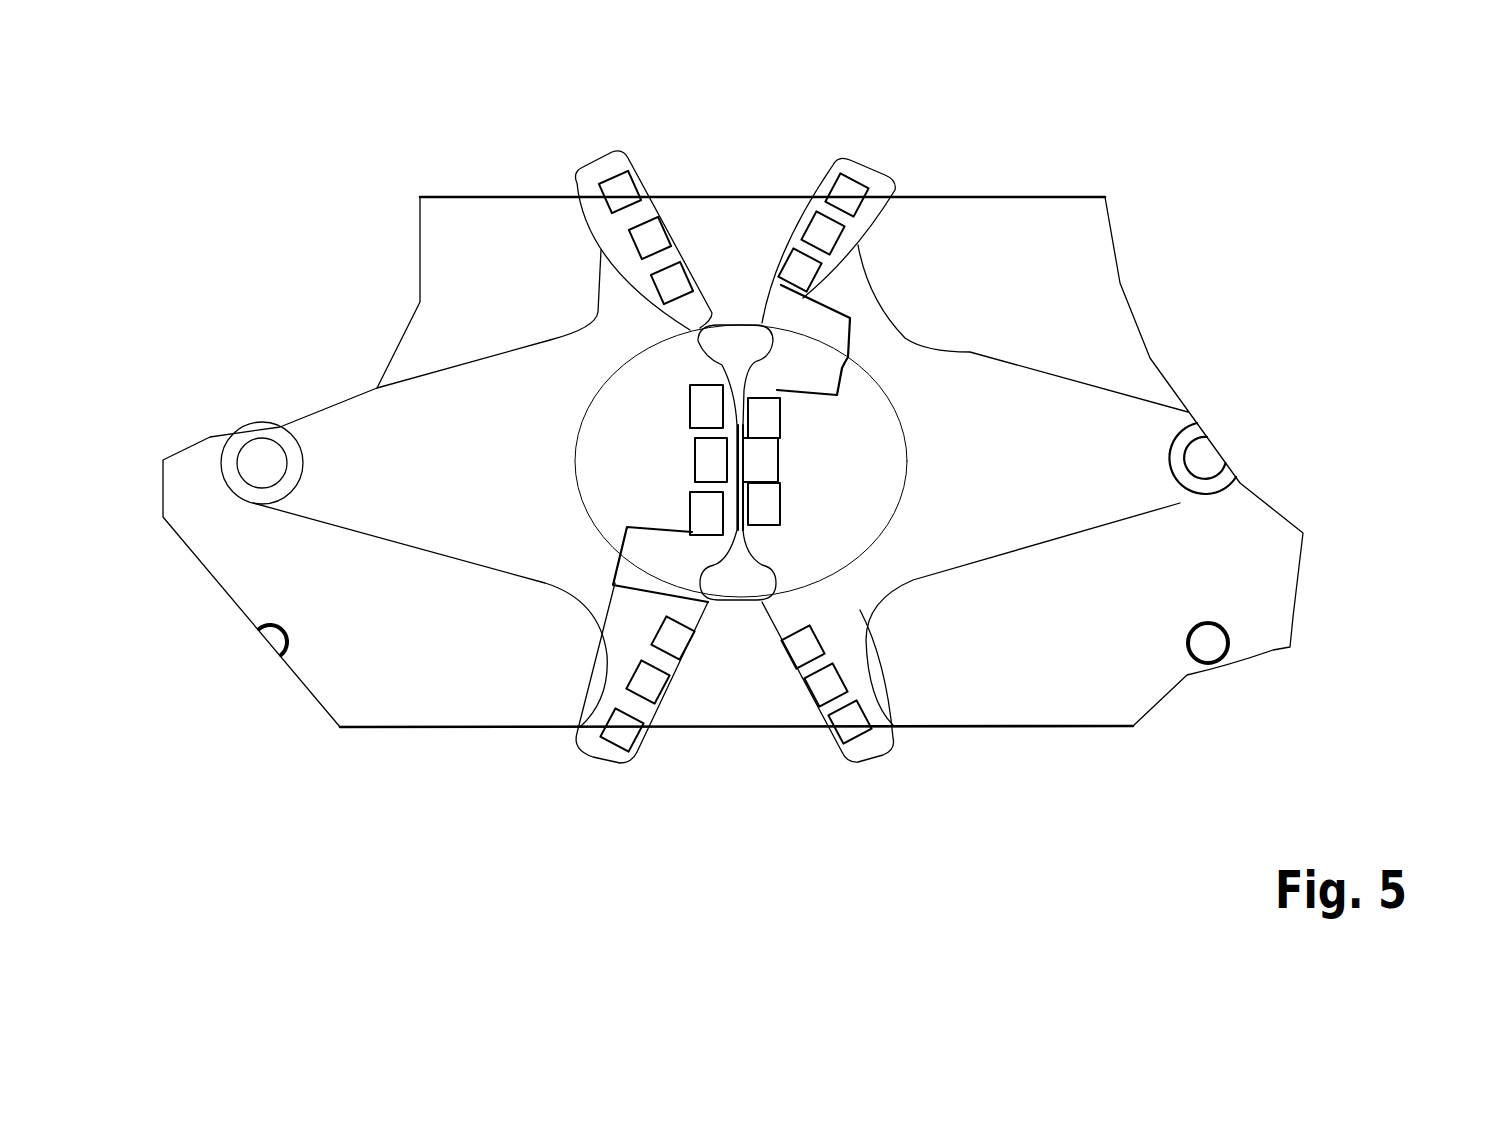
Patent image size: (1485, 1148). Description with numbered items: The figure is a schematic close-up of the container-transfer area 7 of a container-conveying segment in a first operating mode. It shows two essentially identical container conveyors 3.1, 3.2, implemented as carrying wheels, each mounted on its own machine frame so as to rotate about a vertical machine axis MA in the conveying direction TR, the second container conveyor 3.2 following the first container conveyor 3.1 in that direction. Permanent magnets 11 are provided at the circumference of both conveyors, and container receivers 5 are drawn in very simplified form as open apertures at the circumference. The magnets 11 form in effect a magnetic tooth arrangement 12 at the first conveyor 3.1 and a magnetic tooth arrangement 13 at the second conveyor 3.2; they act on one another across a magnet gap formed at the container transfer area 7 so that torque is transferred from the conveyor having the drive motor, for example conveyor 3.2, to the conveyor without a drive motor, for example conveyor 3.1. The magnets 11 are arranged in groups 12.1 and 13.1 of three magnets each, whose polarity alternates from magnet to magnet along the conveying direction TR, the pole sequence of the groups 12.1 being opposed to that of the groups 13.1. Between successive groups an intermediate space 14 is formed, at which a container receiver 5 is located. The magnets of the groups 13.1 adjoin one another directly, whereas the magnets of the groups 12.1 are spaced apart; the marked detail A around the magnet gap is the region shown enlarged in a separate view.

The first container conveyor 3.1 is at (413, 403).
The second container conveyor 3.2 is at (1037, 383).
The container receiver 5 is at (765, 327).
The container transfer area 7 is at (733, 545).
The magnet 11 is at (603, 170).
The magnetic tooth arrangement 12 is at (680, 705).
The group of magnets 12.1 is at (601, 250).
The magnetic tooth arrangement 13 is at (823, 758).
The group of magnets 13.1 is at (848, 225).
The intermediate space 14 is at (846, 360).
The detail A is at (575, 445).
The conveying direction TR is at (820, 152).
The machine axis MA is at (248, 503).